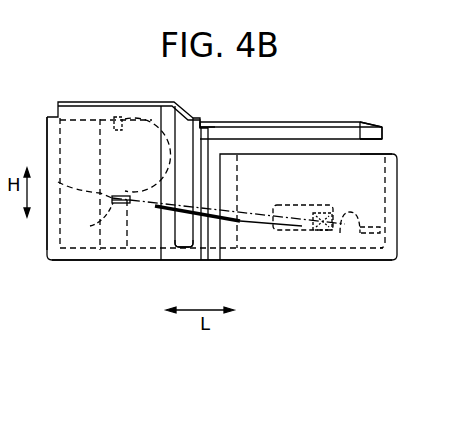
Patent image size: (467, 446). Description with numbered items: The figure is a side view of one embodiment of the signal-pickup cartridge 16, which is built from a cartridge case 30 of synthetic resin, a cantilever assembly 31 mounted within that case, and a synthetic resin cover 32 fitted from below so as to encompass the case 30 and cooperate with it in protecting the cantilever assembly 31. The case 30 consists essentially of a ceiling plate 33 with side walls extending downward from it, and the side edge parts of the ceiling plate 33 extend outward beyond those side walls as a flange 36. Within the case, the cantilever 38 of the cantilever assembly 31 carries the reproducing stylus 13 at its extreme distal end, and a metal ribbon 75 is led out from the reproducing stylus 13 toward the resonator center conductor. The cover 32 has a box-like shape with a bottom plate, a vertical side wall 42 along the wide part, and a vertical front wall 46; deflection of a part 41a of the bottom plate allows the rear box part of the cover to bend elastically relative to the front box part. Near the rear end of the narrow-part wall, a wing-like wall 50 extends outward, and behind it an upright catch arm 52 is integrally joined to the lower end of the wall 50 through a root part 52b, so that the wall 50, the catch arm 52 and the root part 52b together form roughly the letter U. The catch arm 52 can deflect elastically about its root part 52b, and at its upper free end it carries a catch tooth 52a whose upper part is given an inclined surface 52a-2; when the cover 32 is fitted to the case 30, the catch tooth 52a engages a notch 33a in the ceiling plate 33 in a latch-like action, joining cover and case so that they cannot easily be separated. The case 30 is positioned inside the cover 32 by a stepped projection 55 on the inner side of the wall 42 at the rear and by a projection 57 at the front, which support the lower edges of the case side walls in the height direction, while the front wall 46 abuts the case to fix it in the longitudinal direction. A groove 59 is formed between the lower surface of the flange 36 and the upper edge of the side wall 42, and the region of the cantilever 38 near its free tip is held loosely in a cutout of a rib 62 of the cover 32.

The signal-pickup cartridge 16 is at (106, 91).
The front wall 46 is at (50, 137).
The wing-like wall 50 is at (160, 152).
The metal ribbon 75 is at (150, 188).
The reproducing stylus 13 is at (90, 223).
The rib 62 is at (163, 231).
The projection 57 is at (117, 247).
The root part 52b is at (178, 258).
The deflectable part of bottom plate 41a is at (212, 260).
The cantilever assembly 31 is at (252, 260).
The cantilever 38 is at (284, 230).
The stepped projection 55 is at (370, 252).
The cover 32 is at (398, 224).
The side wall 42 is at (375, 177).
The groove 59 is at (378, 147).
The flange 36 is at (343, 130).
The cartridge case 30 is at (298, 122).
The ceiling plate 33 is at (278, 120).
The notch 33a is at (213, 120).
The inclined surface 52a-2 is at (210, 118).
The catch tooth 52a is at (206, 118).
The catch arm 52 is at (208, 187).